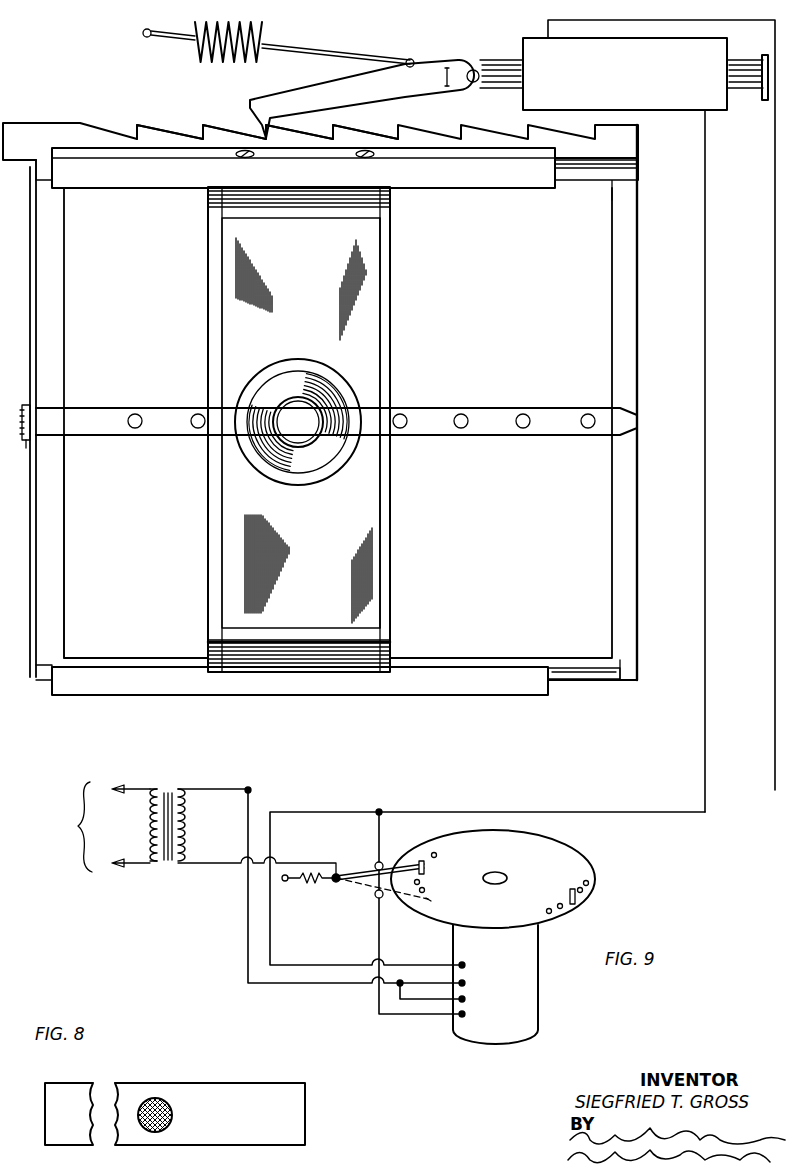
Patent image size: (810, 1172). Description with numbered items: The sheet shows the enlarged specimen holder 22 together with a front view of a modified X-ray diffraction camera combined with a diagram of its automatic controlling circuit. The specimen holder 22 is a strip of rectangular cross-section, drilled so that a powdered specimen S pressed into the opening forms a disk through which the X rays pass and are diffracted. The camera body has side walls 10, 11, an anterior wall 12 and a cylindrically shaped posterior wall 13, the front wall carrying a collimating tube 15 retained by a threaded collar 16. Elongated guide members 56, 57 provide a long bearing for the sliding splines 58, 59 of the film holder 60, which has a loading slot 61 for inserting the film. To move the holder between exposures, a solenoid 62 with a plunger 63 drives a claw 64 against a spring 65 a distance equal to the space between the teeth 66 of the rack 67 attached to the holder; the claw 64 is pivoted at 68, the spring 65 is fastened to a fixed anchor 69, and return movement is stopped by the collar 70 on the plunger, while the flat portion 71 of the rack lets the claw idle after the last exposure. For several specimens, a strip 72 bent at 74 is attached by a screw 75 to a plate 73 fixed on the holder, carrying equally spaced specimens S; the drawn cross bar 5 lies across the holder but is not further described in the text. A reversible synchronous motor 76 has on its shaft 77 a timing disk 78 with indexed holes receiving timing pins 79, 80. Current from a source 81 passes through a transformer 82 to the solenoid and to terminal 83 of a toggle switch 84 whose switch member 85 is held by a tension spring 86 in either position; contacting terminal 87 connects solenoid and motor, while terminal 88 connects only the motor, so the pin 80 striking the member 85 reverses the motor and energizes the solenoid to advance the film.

In FIG. 9, the cross bar with holes 5 is at (524, 418).
In FIG. 9, the side wall 10 is at (215, 592).
In FIG. 9, the side wall 11 is at (390, 362).
In FIG. 9, the anterior wall 12 is at (375, 298).
In FIG. 9, the posterior wall 13 is at (370, 198).
In FIG. 9, the collimating tube 15 is at (303, 446).
In FIG. 9, the threaded collar 16 is at (293, 378).
In FIG. 8, the specimen holder 22 is at (277, 1090).
In FIG. 8, the specimen S is at (165, 1100).
In FIG. 9, the elongated guide member 56 is at (503, 180).
In FIG. 9, the elongated guide member 57 is at (493, 688).
In FIG. 9, the sliding spline 58 is at (610, 172).
In FIG. 9, the sliding spline 59 is at (620, 680).
In FIG. 9, the film holder 60 is at (648, 322).
In FIG. 9, the loading slot 61 is at (583, 670).
In FIG. 9, the solenoid 62 is at (646, 84).
In FIG. 9, the plunger 63 is at (512, 62).
In FIG. 9, the claw 64 is at (268, 108).
In FIG. 9, the spring 65 is at (262, 36).
In FIG. 9, the teeth 66 is at (152, 130).
In FIG. 9, the rack 67 is at (40, 133).
In FIG. 9, the pivot 68 is at (471, 70).
In FIG. 9, the fixed anchor 69 is at (142, 34).
In FIG. 9, the collar 70 is at (758, 97).
In FIG. 9, the flat portion 71 is at (30, 122).
In FIG. 9, the strip 72 is at (108, 410).
In FIG. 9, the plate 73 is at (33, 468).
In FIG. 9, the angular bend 74 is at (32, 440).
In FIG. 9, the screw 75 is at (22, 410).
In FIG. 9, the reversible synchronous motor 76 is at (527, 1008).
In FIG. 9, the motor shaft 77 is at (500, 873).
In FIG. 9, the timing disk 78 is at (570, 862).
In FIG. 9, the timing pin 79 is at (578, 896).
In FIG. 9, the timing pin 80 is at (424, 858).
In FIG. 9, the current source 81 is at (100, 827).
In FIG. 9, the transformer 82 is at (168, 868).
In FIG. 9, the switch terminal 83 is at (334, 883).
In FIG. 9, the switch 84 is at (364, 904).
In FIG. 9, the switch member 85 is at (370, 870).
In FIG. 9, the tension spring 86 is at (297, 882).
In FIG. 9, the switch terminal 87 is at (384, 862).
In FIG. 9, the switch terminal 88 is at (383, 898).